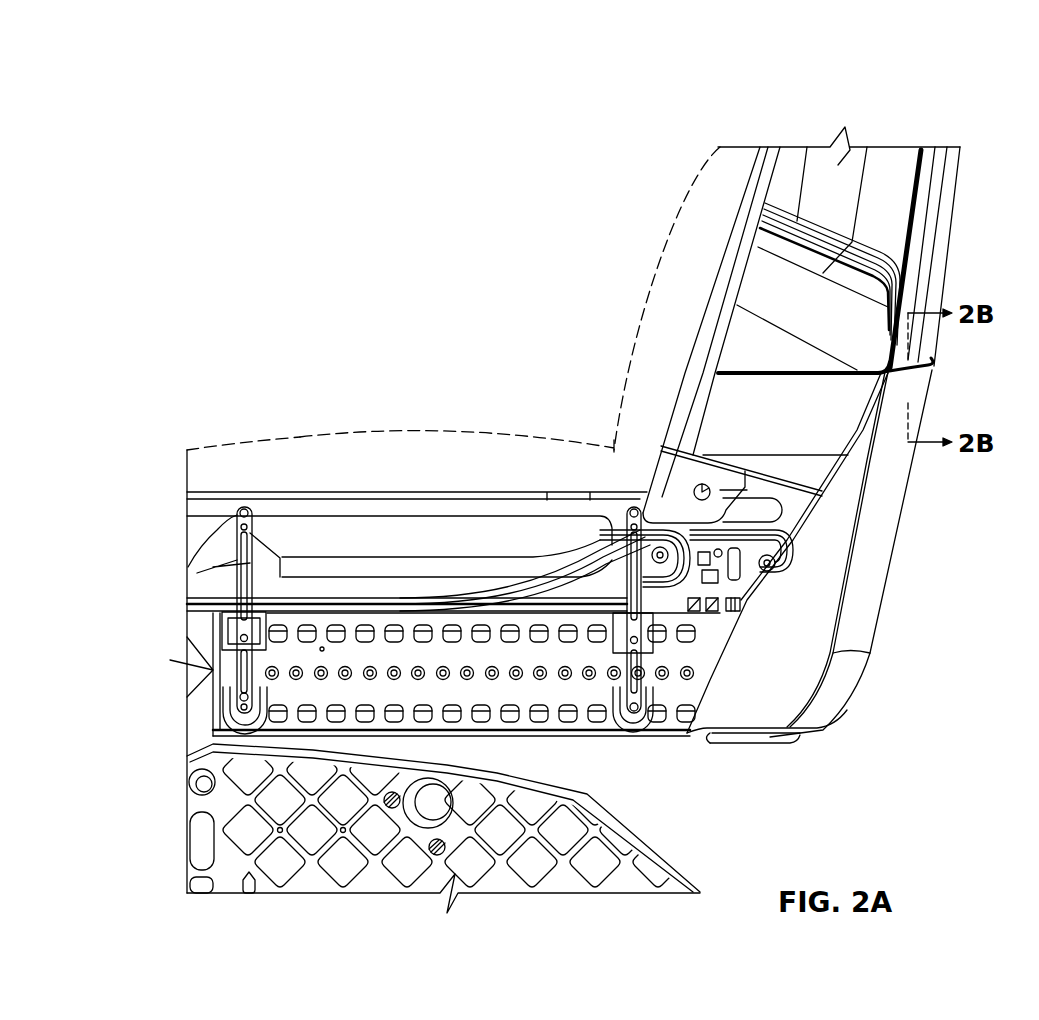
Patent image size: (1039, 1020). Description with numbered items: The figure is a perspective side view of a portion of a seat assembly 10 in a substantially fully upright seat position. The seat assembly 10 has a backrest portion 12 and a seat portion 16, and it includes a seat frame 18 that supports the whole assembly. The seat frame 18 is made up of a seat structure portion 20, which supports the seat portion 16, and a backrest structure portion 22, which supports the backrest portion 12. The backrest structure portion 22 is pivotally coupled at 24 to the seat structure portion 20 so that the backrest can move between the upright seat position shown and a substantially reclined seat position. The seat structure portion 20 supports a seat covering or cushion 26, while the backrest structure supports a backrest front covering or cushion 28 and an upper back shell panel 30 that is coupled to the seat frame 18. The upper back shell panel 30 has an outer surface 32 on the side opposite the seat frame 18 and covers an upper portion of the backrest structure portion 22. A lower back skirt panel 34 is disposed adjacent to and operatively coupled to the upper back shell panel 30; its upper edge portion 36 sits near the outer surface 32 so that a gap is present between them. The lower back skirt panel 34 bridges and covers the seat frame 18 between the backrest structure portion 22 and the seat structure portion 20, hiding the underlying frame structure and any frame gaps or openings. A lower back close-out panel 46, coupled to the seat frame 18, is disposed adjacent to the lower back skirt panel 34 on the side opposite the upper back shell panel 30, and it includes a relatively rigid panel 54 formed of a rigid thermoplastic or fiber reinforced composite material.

The seat assembly 10 is at (788, 106).
The backrest portion 12 is at (653, 260).
The seat portion 16 is at (308, 434).
The seat frame 18 is at (393, 512).
The seat structure portion 20 is at (538, 585).
The backrest structure portion 22 is at (700, 365).
The pivotal coupling 24 is at (790, 560).
The seat covering or cushion 26 is at (217, 450).
The backrest front covering or cushion 28 is at (678, 208).
The upper back shell panel 30 is at (922, 333).
The outer surface 32 is at (937, 295).
The lower back skirt panel 34 is at (845, 684).
The upper edge portion 36 is at (933, 373).
The lower back close-out panel 46 is at (798, 735).
The relatively rigid panel 54 is at (735, 745).